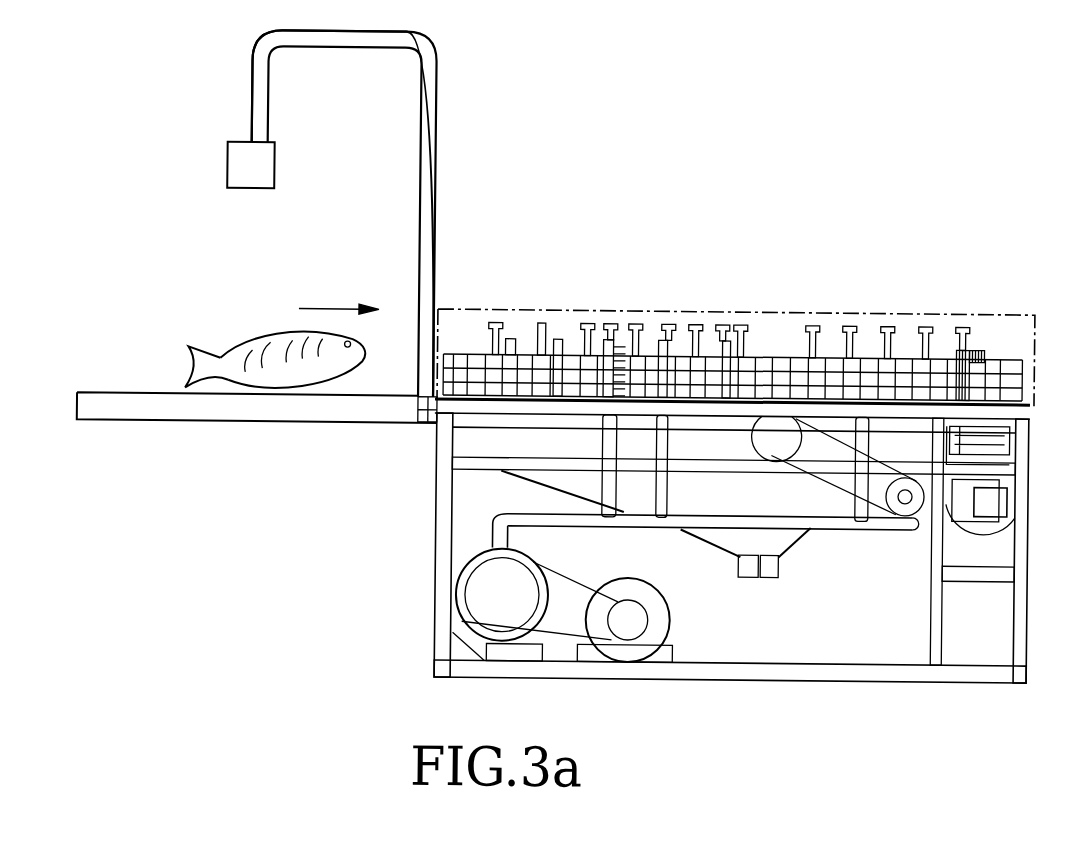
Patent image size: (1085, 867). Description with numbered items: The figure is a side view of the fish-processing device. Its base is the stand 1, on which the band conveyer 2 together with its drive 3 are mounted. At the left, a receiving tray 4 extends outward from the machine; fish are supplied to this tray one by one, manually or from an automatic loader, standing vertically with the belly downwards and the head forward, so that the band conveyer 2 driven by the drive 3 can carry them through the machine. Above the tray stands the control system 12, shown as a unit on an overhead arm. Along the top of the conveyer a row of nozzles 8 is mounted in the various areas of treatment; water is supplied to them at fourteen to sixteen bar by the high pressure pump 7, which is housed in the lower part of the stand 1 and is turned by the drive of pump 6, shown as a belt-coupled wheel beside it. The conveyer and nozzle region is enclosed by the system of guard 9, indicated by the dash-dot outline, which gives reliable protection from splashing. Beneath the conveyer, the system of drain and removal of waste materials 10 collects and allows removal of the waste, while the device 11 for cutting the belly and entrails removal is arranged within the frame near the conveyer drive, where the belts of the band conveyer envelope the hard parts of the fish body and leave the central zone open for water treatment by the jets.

The stand 1 is at (1022, 650).
The band conveyer 2 is at (1013, 375).
The drive 3 is at (1002, 501).
The receiving tray 4 is at (343, 414).
The drive of pump 6 is at (674, 615).
The high pressure pump 7 is at (537, 561).
The nozzles 8 is at (584, 381).
The system of guard 9 is at (987, 312).
The system of drain and removal of waste materials 10 is at (780, 536).
The device for cutting the belly and entrails removal 11 is at (759, 442).
The control system 12 is at (225, 172).